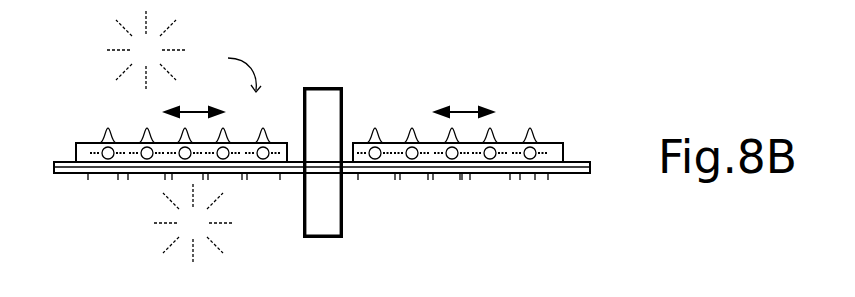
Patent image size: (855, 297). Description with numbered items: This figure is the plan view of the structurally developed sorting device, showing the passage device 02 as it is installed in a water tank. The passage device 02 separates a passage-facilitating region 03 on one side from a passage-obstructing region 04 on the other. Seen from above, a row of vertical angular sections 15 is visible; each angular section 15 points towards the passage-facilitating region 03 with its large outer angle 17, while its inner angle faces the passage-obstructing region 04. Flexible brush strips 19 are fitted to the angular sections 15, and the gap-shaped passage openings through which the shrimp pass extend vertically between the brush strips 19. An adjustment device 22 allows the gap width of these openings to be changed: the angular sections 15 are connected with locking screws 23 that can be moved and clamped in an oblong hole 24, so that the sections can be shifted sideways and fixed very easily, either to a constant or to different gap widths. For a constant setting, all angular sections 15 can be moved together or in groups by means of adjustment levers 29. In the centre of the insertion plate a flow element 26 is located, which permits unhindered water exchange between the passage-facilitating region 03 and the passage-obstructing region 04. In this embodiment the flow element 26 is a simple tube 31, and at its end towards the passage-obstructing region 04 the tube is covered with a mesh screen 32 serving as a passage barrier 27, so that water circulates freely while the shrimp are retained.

The passage device 02 is at (229, 67).
The passage-facilitating region 03 is at (146, 50).
The passage-obstructing region 04 is at (193, 223).
The angular sections 15 is at (410, 134).
The outer angle 17 is at (127, 97).
The brush strips 19 is at (428, 178).
The adjustment device 22 is at (563, 152).
The locking screws 23 is at (460, 177).
The oblong hole 24 is at (535, 177).
The flow element 26 is at (358, 218).
The passage barrier 27 is at (358, 99).
The adjustment levers 29 is at (118, 180).
The tube 31 is at (317, 218).
The mesh screen 32 is at (315, 100).